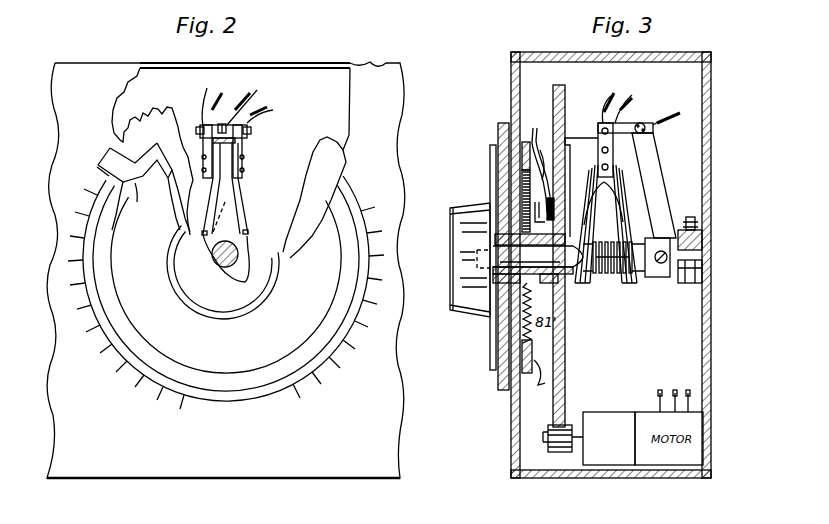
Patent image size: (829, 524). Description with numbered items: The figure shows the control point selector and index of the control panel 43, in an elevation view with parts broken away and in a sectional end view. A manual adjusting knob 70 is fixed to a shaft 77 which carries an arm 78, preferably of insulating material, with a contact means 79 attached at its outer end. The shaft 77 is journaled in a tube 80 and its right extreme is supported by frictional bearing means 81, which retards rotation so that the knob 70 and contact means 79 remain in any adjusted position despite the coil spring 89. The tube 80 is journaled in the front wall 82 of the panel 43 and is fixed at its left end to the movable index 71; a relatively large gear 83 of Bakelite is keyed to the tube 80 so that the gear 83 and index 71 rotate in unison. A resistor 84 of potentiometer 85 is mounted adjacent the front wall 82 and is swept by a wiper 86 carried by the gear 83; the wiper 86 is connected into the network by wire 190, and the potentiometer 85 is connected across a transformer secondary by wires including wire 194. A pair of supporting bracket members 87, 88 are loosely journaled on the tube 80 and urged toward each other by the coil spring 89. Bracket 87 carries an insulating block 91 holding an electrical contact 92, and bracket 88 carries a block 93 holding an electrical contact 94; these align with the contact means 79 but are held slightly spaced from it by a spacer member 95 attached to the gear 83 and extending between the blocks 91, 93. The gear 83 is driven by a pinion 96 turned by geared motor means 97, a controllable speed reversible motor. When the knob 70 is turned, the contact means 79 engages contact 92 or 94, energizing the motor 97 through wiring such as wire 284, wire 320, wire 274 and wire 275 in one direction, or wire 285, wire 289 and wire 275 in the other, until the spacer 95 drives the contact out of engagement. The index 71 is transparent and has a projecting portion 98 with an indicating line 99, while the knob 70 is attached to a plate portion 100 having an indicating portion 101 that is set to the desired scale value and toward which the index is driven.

In FIG. 2, the control panel 43 is at (382, 72).
In FIG. 3, the control panel 43 is at (673, 56).
In FIG. 2, the manual adjusting knob 70 is at (198, 290).
In FIG. 3, the manual adjusting knob 70 is at (475, 300).
In FIG. 2, the movable index 71 is at (227, 385).
In FIG. 3, the movable index 71 is at (500, 128).
In FIG. 2, the shaft 77 is at (238, 255).
In FIG. 3, the shaft 77 is at (543, 285).
In FIG. 3, the arm 78 is at (657, 168).
In FIG. 2, the contact means 79 is at (222, 125).
In FIG. 3, the contact means 79 is at (622, 122).
In FIG. 2, the tube 80 is at (249, 247).
In FIG. 3, the tube 80 is at (574, 272).
In FIG. 3, the frictional bearing means 81 is at (693, 283).
In FIG. 3, the front wall 82 is at (520, 75).
In FIG. 2, the gear 83 is at (160, 120).
In FIG. 3, the gear 83 is at (568, 348).
In FIG. 3, the resistor 84 is at (528, 142).
In FIG. 3, the potentiometer 85 is at (544, 148).
In FIG. 3, the wiper 86 is at (544, 180).
In FIG. 2, the supporting bracket member 87 is at (213, 205).
In FIG. 3, the supporting bracket member 87 is at (633, 212).
In FIG. 2, the supporting bracket member 88 is at (240, 210).
In FIG. 3, the supporting bracket member 88 is at (617, 180).
In FIG. 2, the coil spring 89 is at (249, 232).
In FIG. 3, the coil spring 89 is at (607, 278).
In FIG. 2, the insulating block 91 is at (205, 160).
In FIG. 2, the electrical contact 92 is at (205, 140).
In FIG. 2, the block 93 is at (245, 167).
In FIG. 2, the electrical contact 94 is at (240, 137).
In FIG. 2, the spacer member 95 is at (237, 147).
In FIG. 3, the spacer member 95 is at (580, 135).
In FIG. 3, the pinion 96 is at (560, 447).
In FIG. 3, the geared motor means 97 is at (643, 423).
In FIG. 2, the projecting portion 98 is at (108, 157).
In FIG. 2, the indicating line 99 is at (97, 168).
In FIG. 2, the plate portion 100 is at (263, 355).
In FIG. 2, the indicating portion 101 is at (133, 206).
In FIG. 3, the wire 190 is at (535, 207).
In FIG. 3, the wire 194 is at (540, 386).
In FIG. 3, the wire 274 is at (688, 393).
In FIG. 3, the wire 275 is at (675, 393).
In FIG. 2, the wire 284 is at (255, 93).
In FIG. 2, the wire 285 is at (270, 112).
In FIG. 3, the wire 285 is at (636, 96).
In FIG. 3, the wire 289 is at (675, 117).
In FIG. 2, the wire 320 is at (217, 97).
In FIG. 3, the wire 320 is at (607, 95).